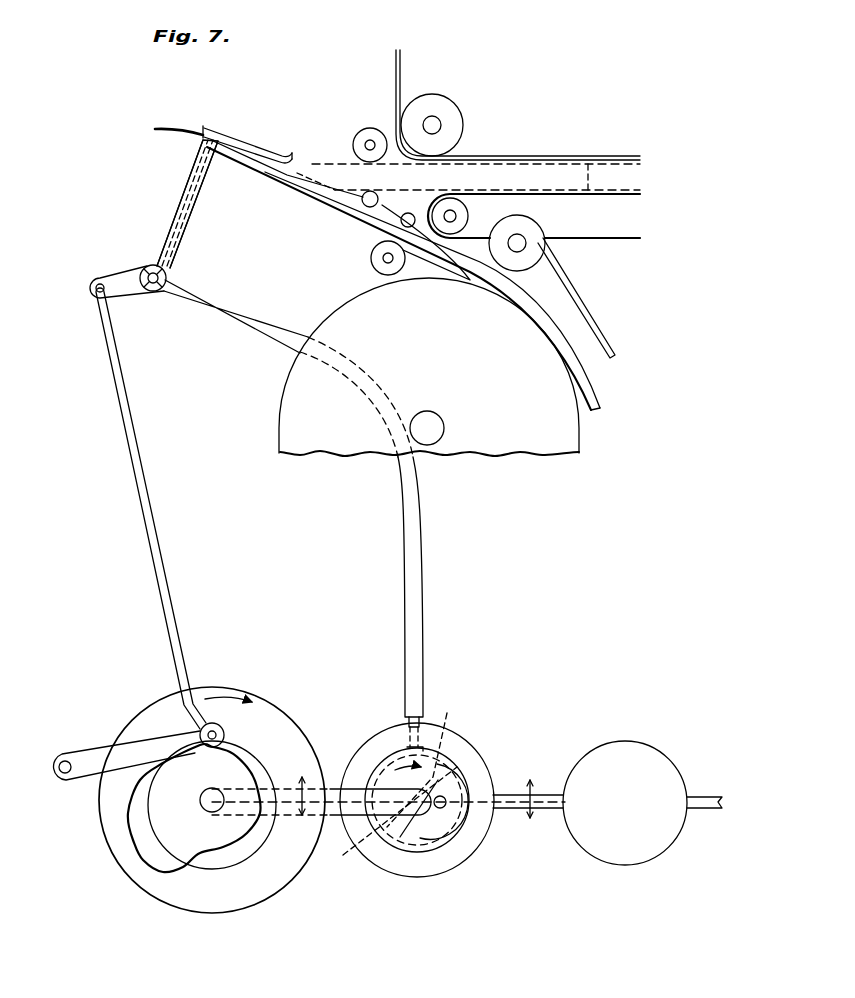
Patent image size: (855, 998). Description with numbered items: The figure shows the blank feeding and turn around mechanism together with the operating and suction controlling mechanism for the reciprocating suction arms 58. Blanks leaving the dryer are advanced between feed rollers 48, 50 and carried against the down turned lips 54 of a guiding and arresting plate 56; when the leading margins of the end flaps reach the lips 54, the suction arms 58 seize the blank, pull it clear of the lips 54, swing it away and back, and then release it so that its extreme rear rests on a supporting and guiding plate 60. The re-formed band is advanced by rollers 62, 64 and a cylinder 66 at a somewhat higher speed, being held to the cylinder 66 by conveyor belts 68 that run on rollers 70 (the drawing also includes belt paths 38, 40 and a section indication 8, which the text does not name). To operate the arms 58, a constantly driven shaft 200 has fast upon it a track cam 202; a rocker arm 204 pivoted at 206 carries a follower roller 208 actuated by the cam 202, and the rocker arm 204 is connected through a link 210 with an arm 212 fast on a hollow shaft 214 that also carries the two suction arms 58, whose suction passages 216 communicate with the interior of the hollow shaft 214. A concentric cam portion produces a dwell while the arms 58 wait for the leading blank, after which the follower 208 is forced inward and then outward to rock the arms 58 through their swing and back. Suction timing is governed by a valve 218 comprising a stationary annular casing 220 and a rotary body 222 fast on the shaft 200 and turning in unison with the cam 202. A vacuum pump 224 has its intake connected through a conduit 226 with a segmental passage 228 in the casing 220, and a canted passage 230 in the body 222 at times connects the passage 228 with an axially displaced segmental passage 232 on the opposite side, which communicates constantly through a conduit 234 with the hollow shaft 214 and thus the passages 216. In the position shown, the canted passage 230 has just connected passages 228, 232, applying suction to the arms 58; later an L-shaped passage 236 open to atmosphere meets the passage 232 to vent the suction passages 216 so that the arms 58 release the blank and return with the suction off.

The upper conveyor belt 38 is at (528, 159).
The lower conveyor belt 40 is at (625, 236).
The feed roller 48 is at (368, 131).
The feed roller 50 is at (374, 192).
The down turned lips 54 is at (202, 128).
The guiding and arresting plate 56 is at (238, 134).
The suction arm 58 is at (190, 166).
The supporting and guiding plate 60 is at (281, 190).
The roller 62 is at (410, 212).
The roller 64 is at (371, 260).
The cylinder 66 is at (287, 398).
The conveyor belt 68 is at (597, 372).
The roller 70 is at (527, 233).
The constantly driven shaft 200 is at (335, 789).
The track cam 202 is at (101, 827).
The rocker arm 204 is at (100, 741).
The pivot 206 is at (60, 767).
The follower roller 208 is at (226, 736).
The link 210 is at (142, 488).
The arm 212 is at (128, 298).
The hollow shaft 214 is at (148, 268).
The suction passage 216 is at (175, 221).
The valve 218 is at (366, 731).
The stationary annular casing 220 is at (386, 733).
The rotary body 222 is at (400, 837).
The vacuum pump 224 is at (655, 757).
The conduit 226 is at (510, 809).
The segmental passage 228 is at (468, 778).
The canted passage 230 is at (428, 760).
The segmental passage 232 is at (389, 819).
The conduit 234 is at (424, 541).
The L-shaped passage 236 is at (438, 808).
The section line 8 is at (416, 793).